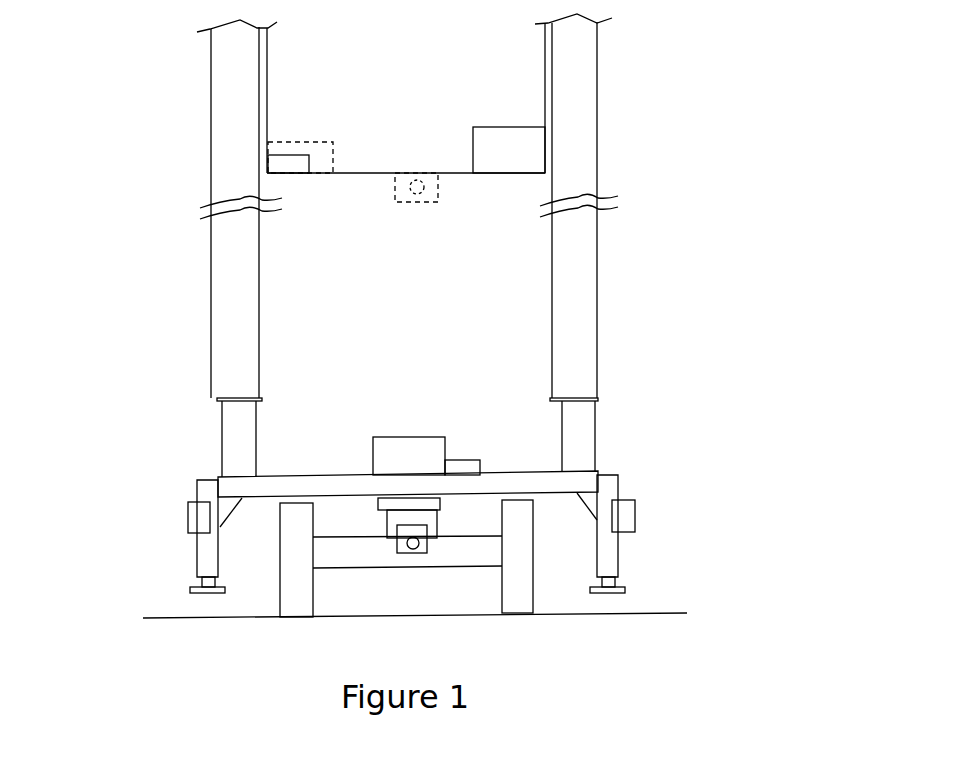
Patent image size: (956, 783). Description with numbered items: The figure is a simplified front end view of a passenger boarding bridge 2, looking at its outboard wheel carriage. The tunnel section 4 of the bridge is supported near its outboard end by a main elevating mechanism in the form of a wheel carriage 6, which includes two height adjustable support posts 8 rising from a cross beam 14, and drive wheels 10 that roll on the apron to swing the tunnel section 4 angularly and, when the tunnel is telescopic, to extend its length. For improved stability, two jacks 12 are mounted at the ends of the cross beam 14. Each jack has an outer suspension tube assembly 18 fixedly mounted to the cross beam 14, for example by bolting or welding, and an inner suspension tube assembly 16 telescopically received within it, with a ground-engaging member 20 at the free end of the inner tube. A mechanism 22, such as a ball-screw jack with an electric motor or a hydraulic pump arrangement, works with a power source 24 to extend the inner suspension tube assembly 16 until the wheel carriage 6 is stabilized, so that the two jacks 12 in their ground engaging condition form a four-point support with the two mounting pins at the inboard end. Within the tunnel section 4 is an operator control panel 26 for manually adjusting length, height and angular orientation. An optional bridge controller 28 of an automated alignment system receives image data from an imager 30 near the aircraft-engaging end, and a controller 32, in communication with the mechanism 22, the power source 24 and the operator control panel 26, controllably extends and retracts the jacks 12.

The passenger boarding bridge 2 is at (765, 80).
The tunnel section 4 is at (377, 173).
The wheel carriage 6 is at (718, 300).
The height adjustable support posts 8 is at (213, 323).
The drive wheels 10 is at (280, 597).
The jacks 12 is at (158, 538).
The cross beam 14 is at (260, 497).
The inner suspension tube assembly 16 is at (202, 583).
The outer suspension tube assembly 18 is at (197, 560).
The ground-engaging member 20 is at (210, 597).
The mechanism 22 is at (188, 518).
The power source 24 is at (413, 437).
The operator control panel 26 is at (522, 127).
The bridge controller 28 is at (298, 142).
The imager 30 is at (409, 202).
The controller 32 is at (280, 156).